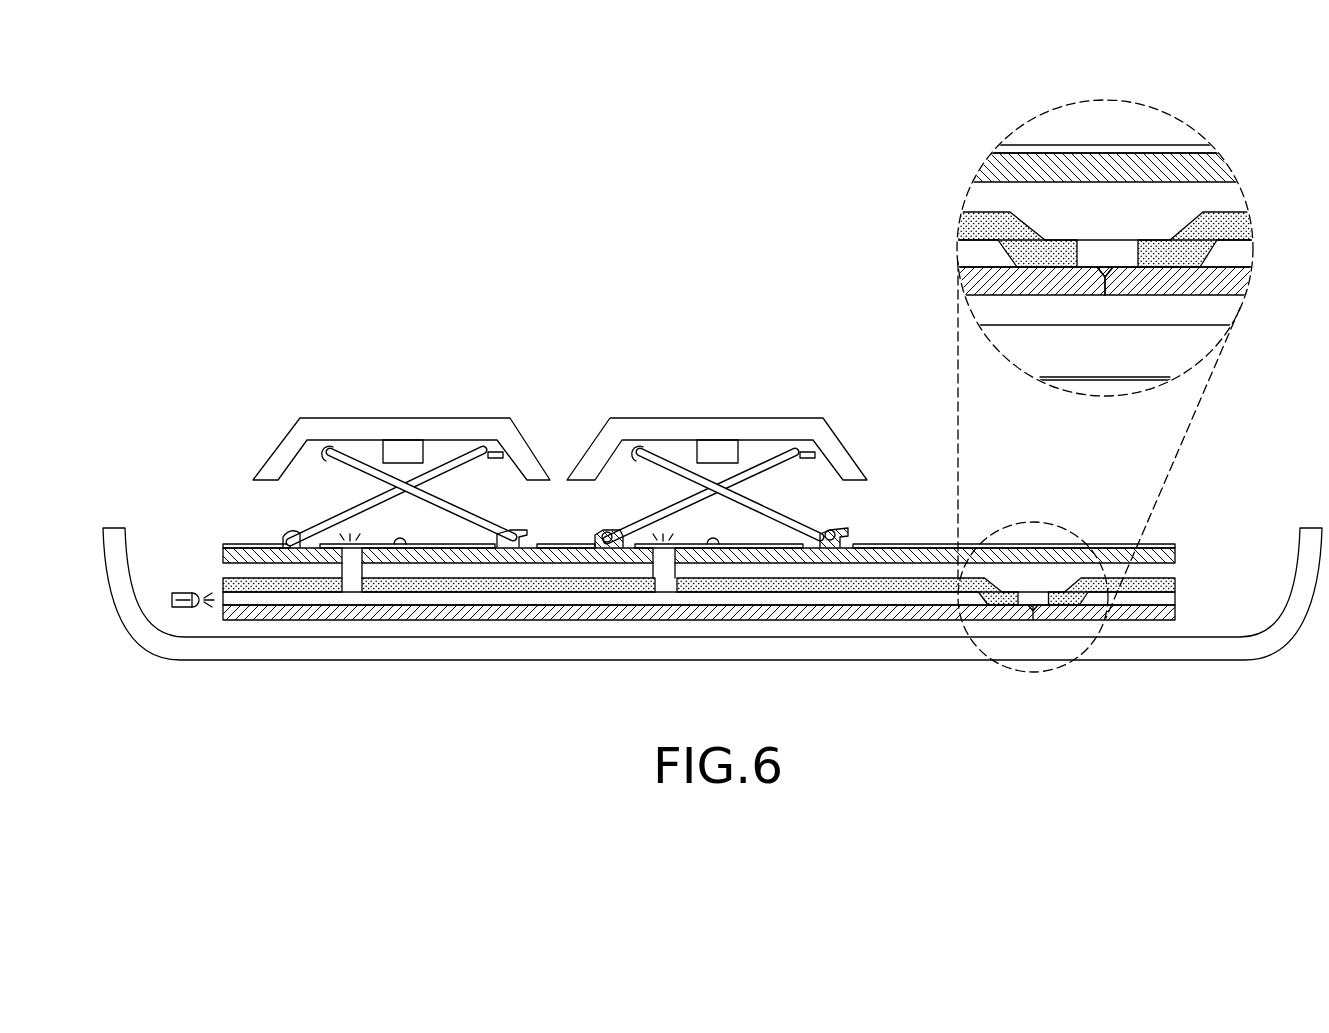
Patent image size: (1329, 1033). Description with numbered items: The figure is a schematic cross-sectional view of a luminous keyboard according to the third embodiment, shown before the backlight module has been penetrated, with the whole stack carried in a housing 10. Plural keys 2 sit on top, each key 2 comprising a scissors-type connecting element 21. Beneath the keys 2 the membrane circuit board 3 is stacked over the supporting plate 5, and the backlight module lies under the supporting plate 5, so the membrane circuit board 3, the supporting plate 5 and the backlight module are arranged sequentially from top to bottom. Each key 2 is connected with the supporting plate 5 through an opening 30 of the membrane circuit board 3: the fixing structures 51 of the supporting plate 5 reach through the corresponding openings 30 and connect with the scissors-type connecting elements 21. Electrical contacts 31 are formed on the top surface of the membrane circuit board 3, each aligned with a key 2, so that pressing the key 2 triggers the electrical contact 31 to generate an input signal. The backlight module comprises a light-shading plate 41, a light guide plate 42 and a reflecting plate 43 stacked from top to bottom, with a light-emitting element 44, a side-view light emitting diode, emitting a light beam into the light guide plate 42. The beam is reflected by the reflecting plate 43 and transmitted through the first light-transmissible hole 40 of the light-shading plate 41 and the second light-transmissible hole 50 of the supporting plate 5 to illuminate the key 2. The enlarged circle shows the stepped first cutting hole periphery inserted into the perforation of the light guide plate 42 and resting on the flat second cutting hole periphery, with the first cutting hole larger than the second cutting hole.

The key 2 is at (672, 418).
The membrane circuit board 3 is at (248, 545).
The supporting plate 5 is at (1170, 546).
The housing 10 is at (247, 648).
The scissors-type connecting element 21 is at (672, 512).
The opening 30 is at (586, 540).
The electrical contact 31 is at (722, 535).
The first light-transmissible hole 40 is at (664, 584).
The light-shading plate 41 is at (679, 467).
The light guide plate 42 is at (1278, 215).
The reflecting plate 43 is at (718, 658).
The light-emitting element 44 is at (118, 662).
The second light-transmissible hole 50 is at (668, 558).
The fixing structure 51 is at (591, 543).